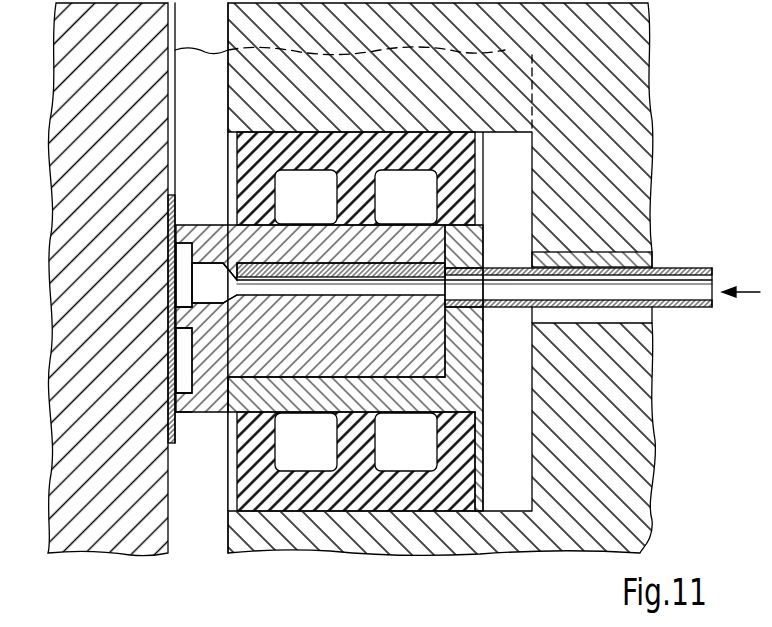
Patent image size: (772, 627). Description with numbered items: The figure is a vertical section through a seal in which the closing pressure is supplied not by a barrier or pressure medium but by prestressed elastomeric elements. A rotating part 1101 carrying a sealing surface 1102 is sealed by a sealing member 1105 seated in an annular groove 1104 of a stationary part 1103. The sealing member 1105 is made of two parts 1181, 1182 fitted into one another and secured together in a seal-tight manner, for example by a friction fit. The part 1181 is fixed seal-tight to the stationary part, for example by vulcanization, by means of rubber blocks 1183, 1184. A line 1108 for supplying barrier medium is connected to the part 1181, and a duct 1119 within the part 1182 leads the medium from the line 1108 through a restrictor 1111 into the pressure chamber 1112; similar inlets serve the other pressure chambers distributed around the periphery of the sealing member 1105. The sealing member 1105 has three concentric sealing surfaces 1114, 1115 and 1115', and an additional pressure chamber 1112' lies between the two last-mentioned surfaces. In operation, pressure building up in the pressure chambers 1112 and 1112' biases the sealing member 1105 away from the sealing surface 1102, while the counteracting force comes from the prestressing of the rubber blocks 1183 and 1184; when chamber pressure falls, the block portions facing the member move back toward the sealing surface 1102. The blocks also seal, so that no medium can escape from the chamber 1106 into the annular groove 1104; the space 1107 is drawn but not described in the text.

The rotating part 1101 is at (130, 41).
The sealing surface 1102 is at (180, 215).
The stationary part 1103 is at (601, 48).
The annular groove 1104 is at (498, 134).
The sealing member 1105 is at (483, 363).
The chamber 1106 is at (222, 39).
The lower spacer 1107 is at (220, 527).
The line for supplying barrier medium 1108 is at (693, 308).
The restrictor 1111 is at (257, 278).
The pressure chamber 1112 is at (147, 275).
The additional pressure chamber 1112' is at (145, 363).
The concentric sealing surface 1114 is at (167, 236).
The concentric sealing surface 1115 is at (144, 326).
The concentric sealing surface 1115' is at (145, 421).
The duct 1119 is at (358, 278).
The part of the sealing member 1181 is at (478, 398).
The part of the sealing member 1182 is at (443, 330).
The rubber block 1183 is at (242, 150).
The rubber block 1184 is at (242, 458).